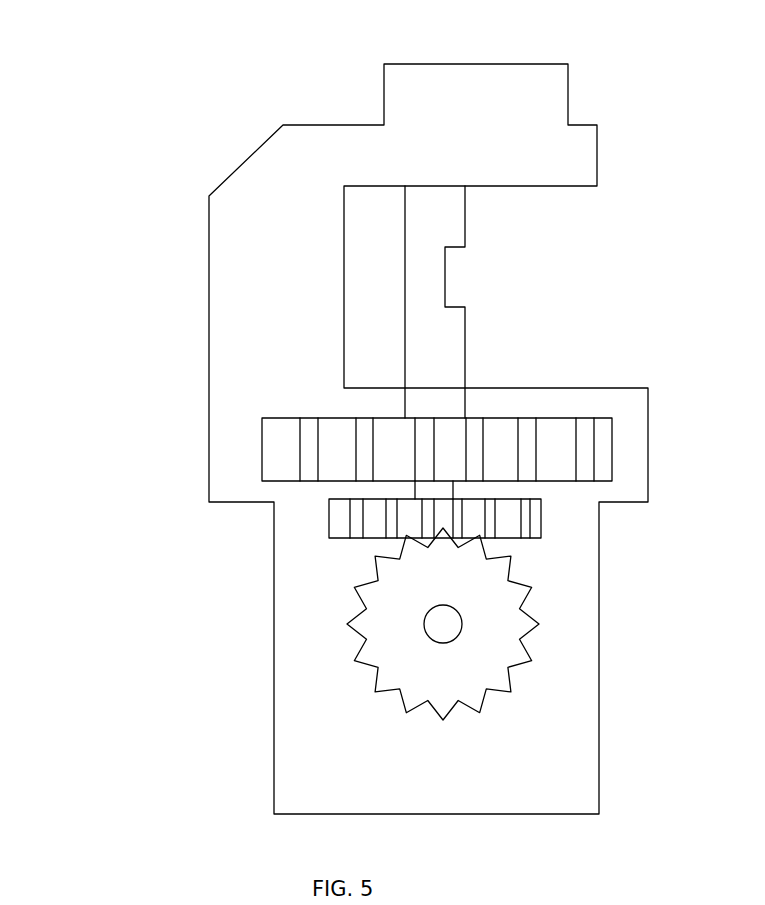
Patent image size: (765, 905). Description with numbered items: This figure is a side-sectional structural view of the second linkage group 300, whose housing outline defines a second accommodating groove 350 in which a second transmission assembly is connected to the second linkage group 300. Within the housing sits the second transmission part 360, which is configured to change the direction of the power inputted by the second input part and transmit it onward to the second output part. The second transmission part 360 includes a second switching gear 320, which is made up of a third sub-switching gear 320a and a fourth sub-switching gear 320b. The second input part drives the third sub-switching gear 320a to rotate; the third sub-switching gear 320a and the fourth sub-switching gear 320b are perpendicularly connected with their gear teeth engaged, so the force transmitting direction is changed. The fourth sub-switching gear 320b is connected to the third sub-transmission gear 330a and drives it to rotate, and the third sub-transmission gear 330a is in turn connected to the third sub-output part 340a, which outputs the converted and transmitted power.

The second linkage group 300 is at (316, 100).
The second accommodating groove 350 is at (555, 248).
The third sub-output part 340a is at (440, 345).
The third sub-transmission gear 330a is at (282, 450).
The second transmission part 360 is at (163, 478).
The second switching gear 320 is at (80, 523).
The fourth sub-switching gear 320b is at (342, 518).
The third sub-switching gear 320a is at (385, 626).